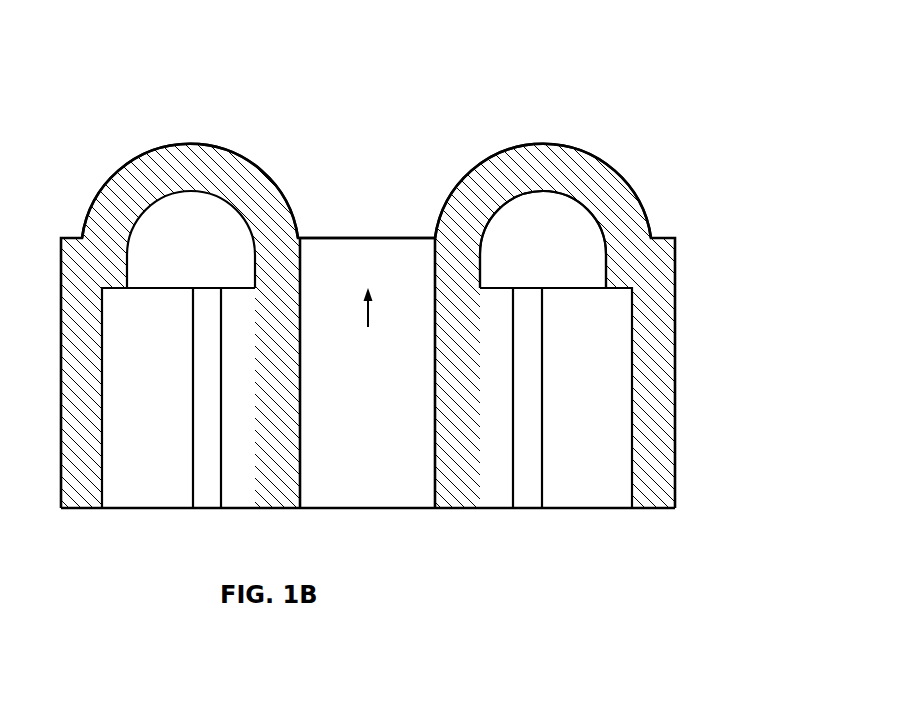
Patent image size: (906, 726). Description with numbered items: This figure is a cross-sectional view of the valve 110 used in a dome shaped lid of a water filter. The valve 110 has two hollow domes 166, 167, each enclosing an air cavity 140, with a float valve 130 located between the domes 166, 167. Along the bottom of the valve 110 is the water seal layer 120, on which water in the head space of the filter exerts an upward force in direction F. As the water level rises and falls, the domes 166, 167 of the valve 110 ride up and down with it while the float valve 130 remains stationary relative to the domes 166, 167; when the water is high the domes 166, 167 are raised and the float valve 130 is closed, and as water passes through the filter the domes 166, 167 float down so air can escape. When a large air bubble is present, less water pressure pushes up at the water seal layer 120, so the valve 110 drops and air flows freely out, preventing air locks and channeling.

The valve 110 is at (697, 360).
The water seal layer 120 is at (455, 520).
The float valve 130 is at (368, 220).
The air cavity 140 is at (558, 242).
The dome 166 is at (538, 133).
The dome 167 is at (185, 133).